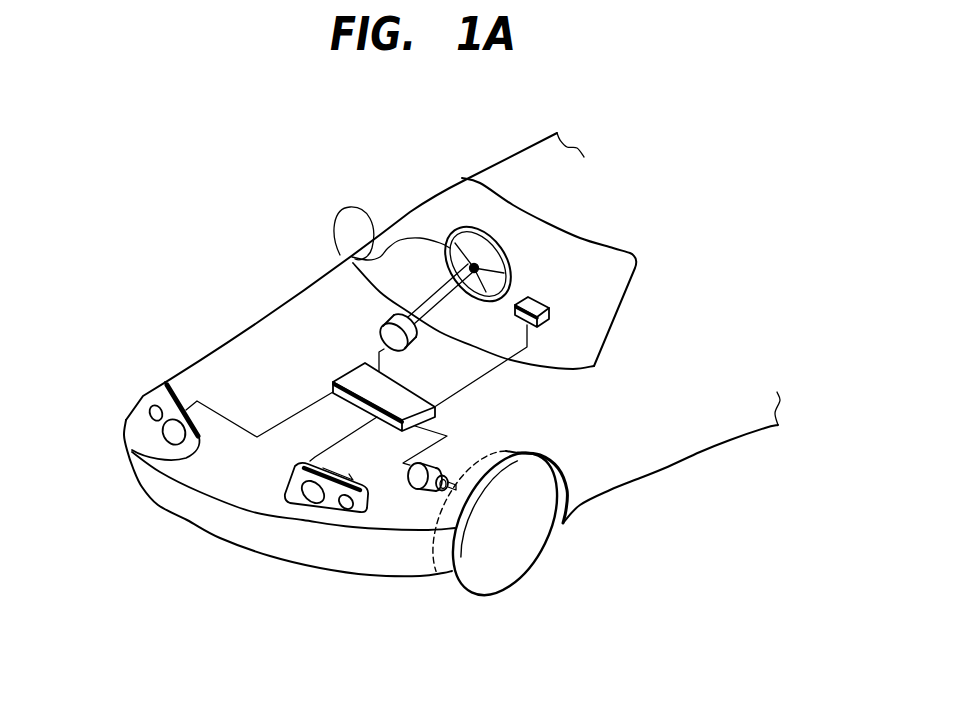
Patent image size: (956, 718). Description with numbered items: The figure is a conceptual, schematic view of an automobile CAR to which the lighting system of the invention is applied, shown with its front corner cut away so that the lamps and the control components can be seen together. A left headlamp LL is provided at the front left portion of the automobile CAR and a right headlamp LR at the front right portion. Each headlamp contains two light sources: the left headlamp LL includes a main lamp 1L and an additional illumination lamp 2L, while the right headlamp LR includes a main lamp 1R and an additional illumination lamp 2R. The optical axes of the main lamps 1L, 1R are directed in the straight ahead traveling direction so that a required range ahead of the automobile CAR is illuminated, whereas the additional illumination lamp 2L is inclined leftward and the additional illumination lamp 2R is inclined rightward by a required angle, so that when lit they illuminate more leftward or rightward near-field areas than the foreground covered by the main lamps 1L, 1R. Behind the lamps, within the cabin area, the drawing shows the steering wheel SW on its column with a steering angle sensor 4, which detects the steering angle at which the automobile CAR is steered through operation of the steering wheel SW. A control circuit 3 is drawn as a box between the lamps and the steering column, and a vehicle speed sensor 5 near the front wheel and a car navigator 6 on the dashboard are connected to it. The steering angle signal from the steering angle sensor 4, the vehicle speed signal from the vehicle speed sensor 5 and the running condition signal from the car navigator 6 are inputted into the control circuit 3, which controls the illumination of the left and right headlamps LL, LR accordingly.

The automobile CAR is at (488, 175).
The steering wheel SW is at (511, 274).
The control circuit 3 is at (436, 405).
The steering angle sensor 4 is at (391, 321).
The vehicle speed sensor 5 is at (416, 486).
The car navigator 6 is at (537, 297).
The main lamp 1R is at (175, 442).
The additional illumination lamp 2R is at (150, 412).
The right headlamp LR is at (155, 438).
The main lamp 1L is at (313, 493).
The additional illumination lamp 2L is at (346, 512).
The left headlamp LL is at (332, 508).